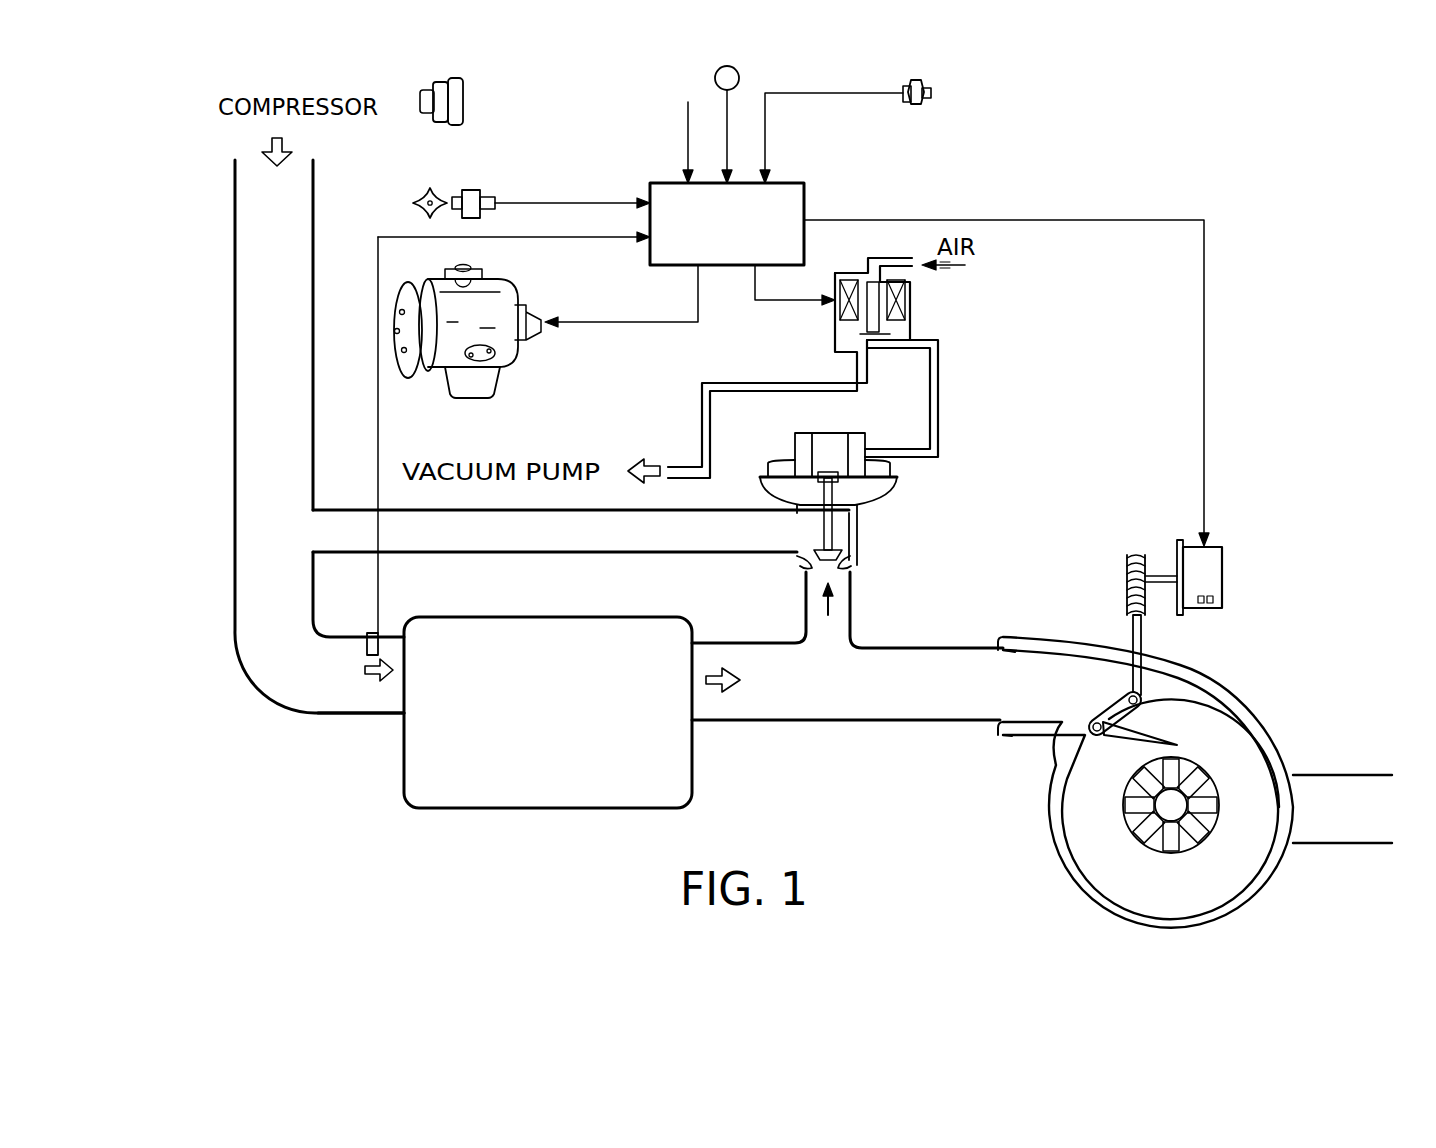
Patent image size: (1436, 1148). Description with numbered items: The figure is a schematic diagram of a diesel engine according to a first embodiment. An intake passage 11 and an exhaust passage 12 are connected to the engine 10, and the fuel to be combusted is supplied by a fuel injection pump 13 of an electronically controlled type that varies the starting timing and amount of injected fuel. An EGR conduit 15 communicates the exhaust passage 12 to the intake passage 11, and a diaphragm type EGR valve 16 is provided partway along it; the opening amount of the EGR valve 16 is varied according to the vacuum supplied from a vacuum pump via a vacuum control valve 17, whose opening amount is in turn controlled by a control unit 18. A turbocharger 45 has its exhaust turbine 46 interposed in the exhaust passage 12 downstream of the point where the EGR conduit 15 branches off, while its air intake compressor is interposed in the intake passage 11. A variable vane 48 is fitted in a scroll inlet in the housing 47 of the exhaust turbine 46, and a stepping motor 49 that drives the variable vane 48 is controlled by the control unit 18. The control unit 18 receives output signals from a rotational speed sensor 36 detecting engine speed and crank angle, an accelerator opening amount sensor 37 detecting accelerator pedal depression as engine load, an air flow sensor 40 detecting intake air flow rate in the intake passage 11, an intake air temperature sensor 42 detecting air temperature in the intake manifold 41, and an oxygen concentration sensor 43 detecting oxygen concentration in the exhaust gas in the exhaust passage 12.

The engine 10 is at (554, 808).
The intake passage 11 is at (249, 493).
The exhaust passage 12 is at (902, 721).
The fuel injection pump 13 is at (438, 364).
The EGR conduit 15 is at (628, 542).
The EGR valve 16 is at (836, 533).
The vacuum control valve 17 is at (910, 304).
The control unit 18 is at (805, 190).
The rotational speed sensor 36 is at (461, 191).
The accelerator opening amount sensor 37 is at (714, 82).
The air flow sensor 40 is at (456, 130).
The intake manifold 41 is at (348, 712).
The intake air temperature sensor 42 is at (380, 630).
The oxygen concentration sensor 43 is at (911, 106).
The turbocharger 45 is at (1262, 716).
The exhaust turbine 46 is at (1128, 802).
The housing 47 is at (1091, 858).
The variable vane 48 is at (1144, 706).
The stepping motor 49 is at (1222, 572).